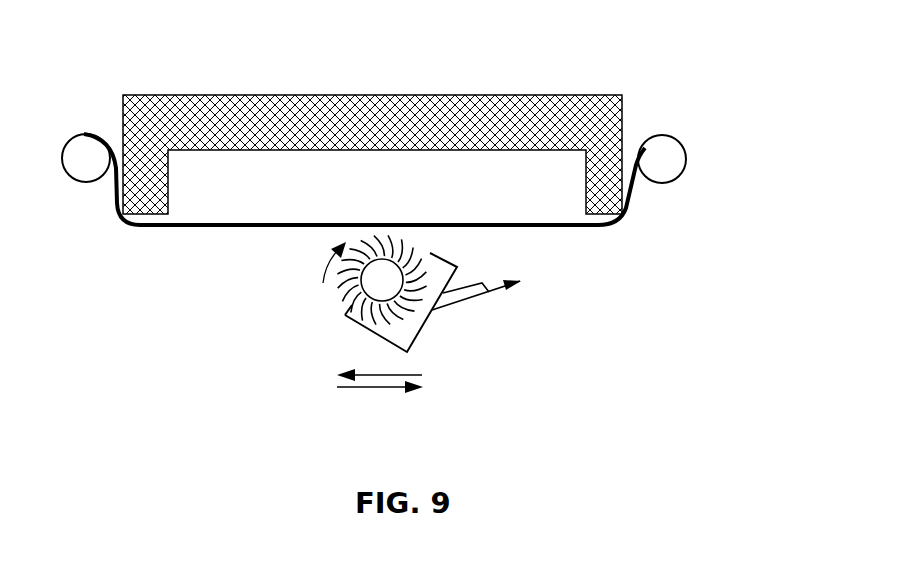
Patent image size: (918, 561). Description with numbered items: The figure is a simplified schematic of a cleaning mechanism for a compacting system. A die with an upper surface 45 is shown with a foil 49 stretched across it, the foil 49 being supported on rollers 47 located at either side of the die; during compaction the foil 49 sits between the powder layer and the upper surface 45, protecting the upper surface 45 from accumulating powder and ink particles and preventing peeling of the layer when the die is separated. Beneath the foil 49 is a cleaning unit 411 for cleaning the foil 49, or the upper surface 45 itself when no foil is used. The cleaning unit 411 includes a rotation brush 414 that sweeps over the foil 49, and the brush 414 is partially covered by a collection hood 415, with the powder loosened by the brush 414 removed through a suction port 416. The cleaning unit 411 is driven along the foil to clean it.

The upper surface 45 is at (268, 150).
The rollers 47 is at (687, 147).
The foil 49 is at (110, 190).
The cleaning unit 411 is at (423, 377).
The rotation brush 414 is at (350, 312).
The collection hood 415 is at (423, 328).
The suction port 416 is at (480, 302).